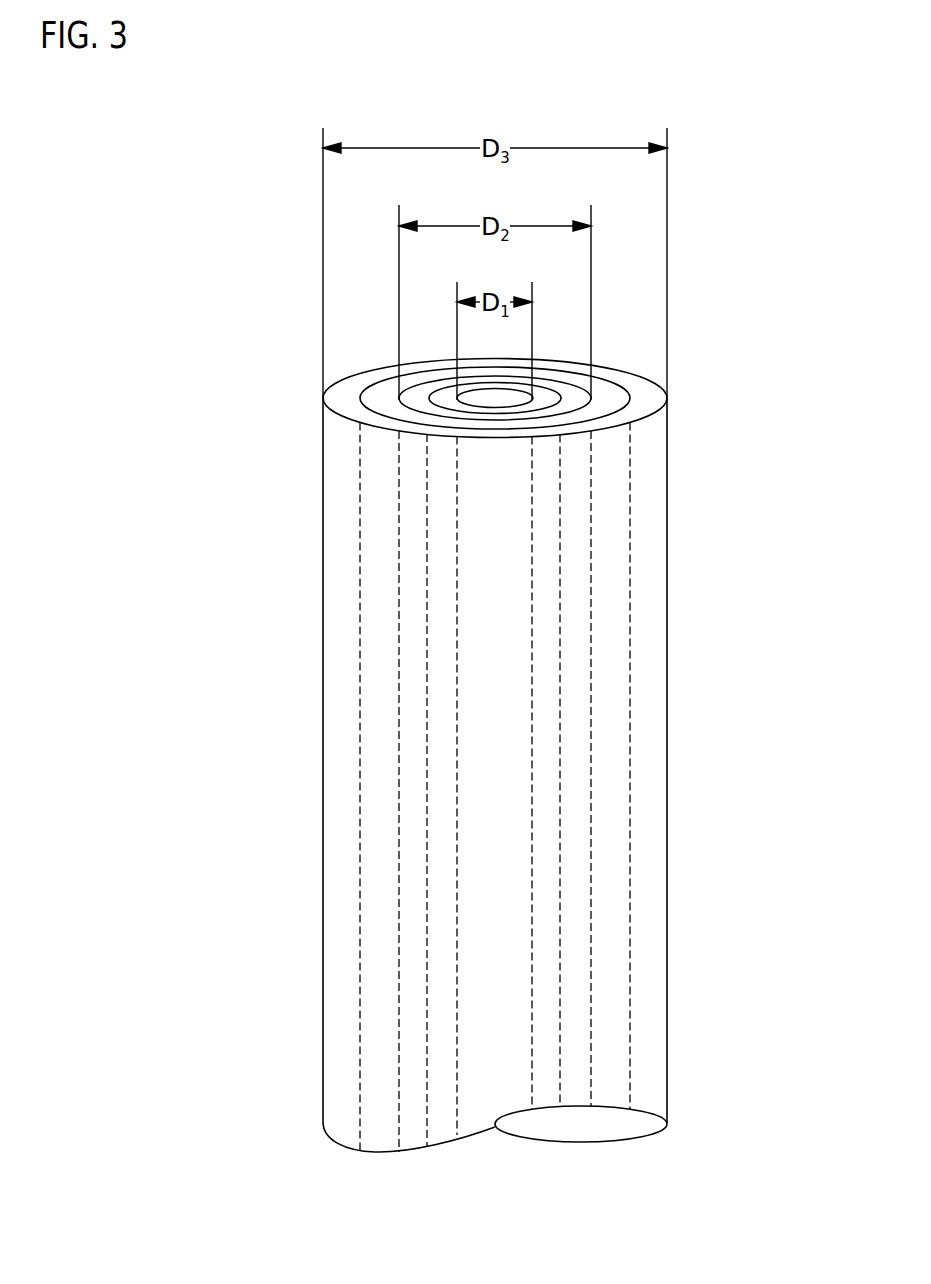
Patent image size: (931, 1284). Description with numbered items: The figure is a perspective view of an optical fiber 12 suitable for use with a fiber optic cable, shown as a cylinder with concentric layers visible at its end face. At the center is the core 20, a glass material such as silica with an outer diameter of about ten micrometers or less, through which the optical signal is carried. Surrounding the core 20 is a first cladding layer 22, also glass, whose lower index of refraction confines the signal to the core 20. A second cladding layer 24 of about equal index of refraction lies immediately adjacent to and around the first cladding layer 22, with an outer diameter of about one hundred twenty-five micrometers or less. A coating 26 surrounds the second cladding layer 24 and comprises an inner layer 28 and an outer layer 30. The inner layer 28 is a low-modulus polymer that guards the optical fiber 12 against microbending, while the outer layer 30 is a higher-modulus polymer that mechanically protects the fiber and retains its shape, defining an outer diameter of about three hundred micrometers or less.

The optical fiber 12 is at (258, 528).
The core 20 is at (533, 528).
The first cladding layer 22 is at (558, 675).
The second cladding layer 24 is at (399, 808).
The coating 26 is at (672, 901).
The inner layer 28 is at (629, 833).
The outer layer 30 is at (668, 1037).